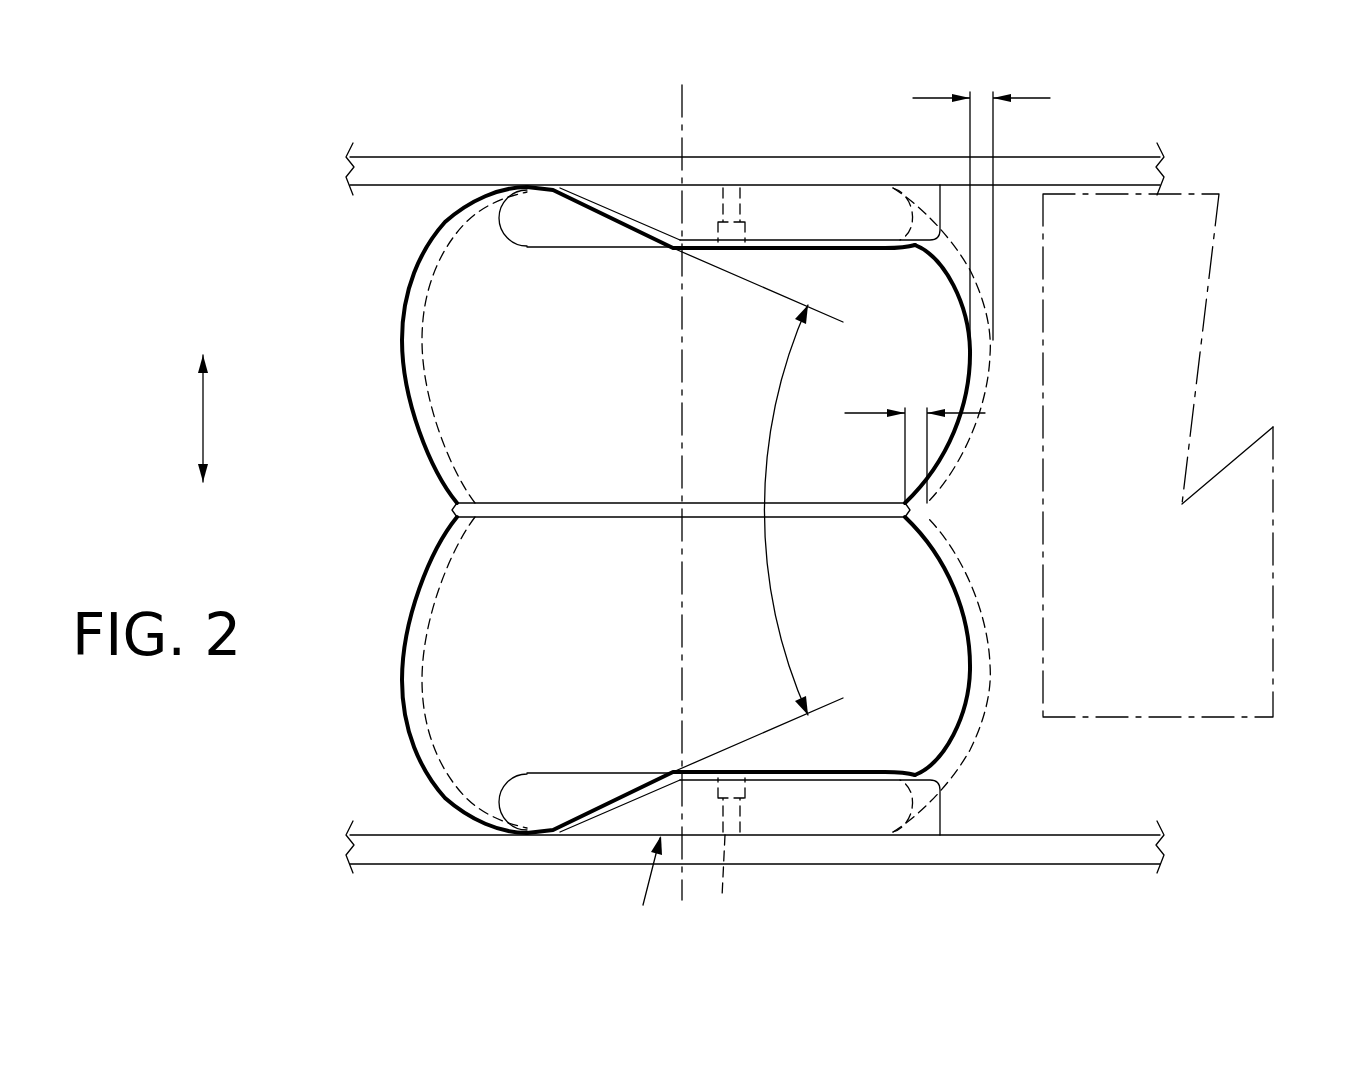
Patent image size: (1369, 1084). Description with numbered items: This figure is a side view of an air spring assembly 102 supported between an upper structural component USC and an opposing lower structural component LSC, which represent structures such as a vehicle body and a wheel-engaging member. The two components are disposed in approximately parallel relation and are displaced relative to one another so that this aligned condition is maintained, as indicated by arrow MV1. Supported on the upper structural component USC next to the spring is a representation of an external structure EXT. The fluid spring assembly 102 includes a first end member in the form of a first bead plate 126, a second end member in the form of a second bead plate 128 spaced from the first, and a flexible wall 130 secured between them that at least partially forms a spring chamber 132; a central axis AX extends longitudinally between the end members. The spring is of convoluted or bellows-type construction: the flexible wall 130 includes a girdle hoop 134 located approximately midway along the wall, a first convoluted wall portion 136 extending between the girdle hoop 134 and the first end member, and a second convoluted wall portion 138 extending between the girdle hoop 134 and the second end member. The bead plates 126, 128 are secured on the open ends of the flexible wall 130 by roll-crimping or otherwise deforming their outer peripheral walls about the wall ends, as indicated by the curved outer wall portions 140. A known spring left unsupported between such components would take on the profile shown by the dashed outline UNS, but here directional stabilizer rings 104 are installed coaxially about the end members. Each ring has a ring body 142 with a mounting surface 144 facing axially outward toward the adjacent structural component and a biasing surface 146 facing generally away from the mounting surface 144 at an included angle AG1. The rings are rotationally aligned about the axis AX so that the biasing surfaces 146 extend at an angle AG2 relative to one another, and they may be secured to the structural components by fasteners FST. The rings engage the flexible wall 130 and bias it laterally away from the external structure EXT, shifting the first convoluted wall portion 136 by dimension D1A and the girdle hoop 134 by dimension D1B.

The fluid spring assembly 102 is at (620, 300).
The directional stabilizer ring 104 is at (709, 514).
The first bead plate 126 is at (542, 207).
The second bead plate 128 is at (543, 813).
The flexible wall 130 is at (626, 722).
The spring chamber 132 is at (475, 682).
The girdle hoop 134 is at (455, 504).
The first convoluted wall portion 136 is at (403, 388).
The second convoluted wall portion 138 is at (403, 668).
The curved outer wall portion 140 is at (527, 246).
The ring body 142 is at (922, 227).
The mounting surface 144 is at (753, 190).
The biasing surface 146 is at (603, 203).
The upper structural component USC is at (410, 163).
The lower structural component LSC is at (407, 860).
The central axis AX is at (683, 118).
The external structure EXT is at (1210, 296).
The arrow MV1 is at (203, 415).
The dimension D1A is at (1009, 214).
The dimension D1B is at (889, 452).
The included angle AG1 is at (648, 778).
The angle AG2 is at (758, 510).
The fastener FST is at (688, 881).
The dashed outline UNS is at (977, 745).